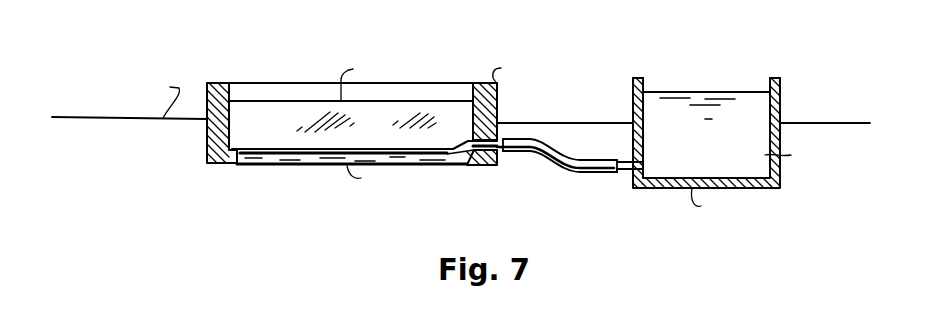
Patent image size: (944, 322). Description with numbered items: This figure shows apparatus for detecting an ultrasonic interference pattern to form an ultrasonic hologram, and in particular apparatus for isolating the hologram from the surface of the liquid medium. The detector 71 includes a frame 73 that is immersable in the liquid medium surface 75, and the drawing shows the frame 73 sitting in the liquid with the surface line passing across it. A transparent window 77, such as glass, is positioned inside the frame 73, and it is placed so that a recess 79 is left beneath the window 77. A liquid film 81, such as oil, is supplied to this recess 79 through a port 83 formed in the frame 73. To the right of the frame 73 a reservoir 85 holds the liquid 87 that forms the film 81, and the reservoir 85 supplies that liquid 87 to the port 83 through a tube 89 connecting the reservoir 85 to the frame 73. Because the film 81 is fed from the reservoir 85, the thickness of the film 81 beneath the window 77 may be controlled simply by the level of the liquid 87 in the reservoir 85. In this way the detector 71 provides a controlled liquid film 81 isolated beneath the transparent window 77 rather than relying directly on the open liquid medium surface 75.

The detector 71 is at (427, 78).
The frame 73 is at (227, 83).
The liquid medium surface 75 is at (68, 117).
The transparent window 77 is at (288, 101).
The recess 79 is at (272, 153).
The liquid film 81 is at (301, 162).
The port 83 is at (497, 167).
The reservoir 85 is at (780, 178).
The liquid 87 is at (765, 139).
The tube 89 is at (549, 159).